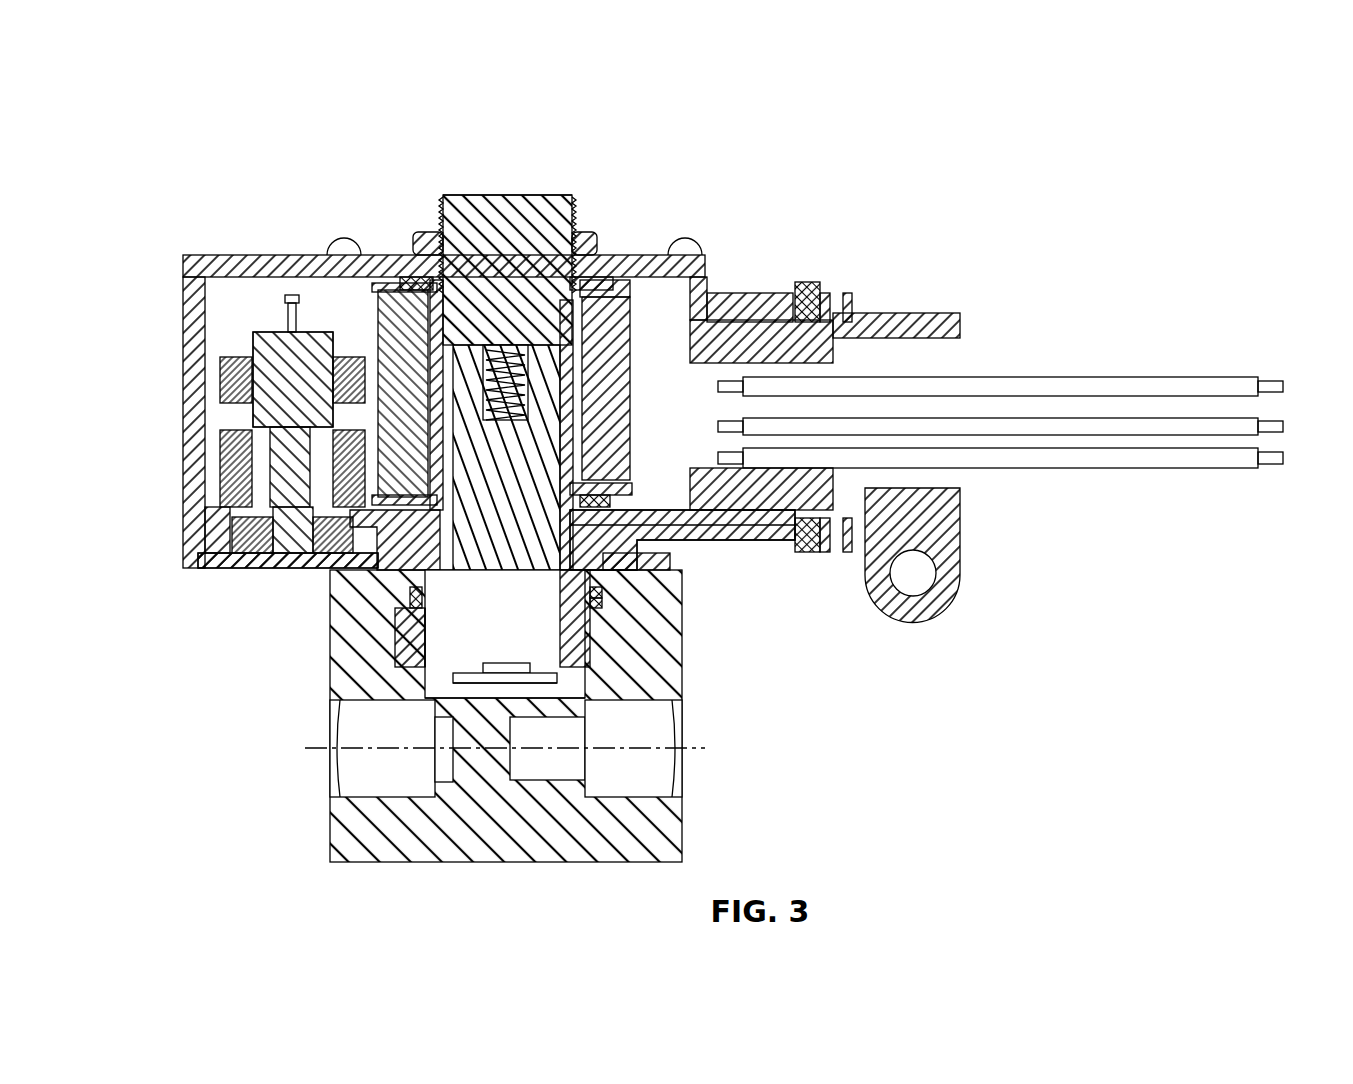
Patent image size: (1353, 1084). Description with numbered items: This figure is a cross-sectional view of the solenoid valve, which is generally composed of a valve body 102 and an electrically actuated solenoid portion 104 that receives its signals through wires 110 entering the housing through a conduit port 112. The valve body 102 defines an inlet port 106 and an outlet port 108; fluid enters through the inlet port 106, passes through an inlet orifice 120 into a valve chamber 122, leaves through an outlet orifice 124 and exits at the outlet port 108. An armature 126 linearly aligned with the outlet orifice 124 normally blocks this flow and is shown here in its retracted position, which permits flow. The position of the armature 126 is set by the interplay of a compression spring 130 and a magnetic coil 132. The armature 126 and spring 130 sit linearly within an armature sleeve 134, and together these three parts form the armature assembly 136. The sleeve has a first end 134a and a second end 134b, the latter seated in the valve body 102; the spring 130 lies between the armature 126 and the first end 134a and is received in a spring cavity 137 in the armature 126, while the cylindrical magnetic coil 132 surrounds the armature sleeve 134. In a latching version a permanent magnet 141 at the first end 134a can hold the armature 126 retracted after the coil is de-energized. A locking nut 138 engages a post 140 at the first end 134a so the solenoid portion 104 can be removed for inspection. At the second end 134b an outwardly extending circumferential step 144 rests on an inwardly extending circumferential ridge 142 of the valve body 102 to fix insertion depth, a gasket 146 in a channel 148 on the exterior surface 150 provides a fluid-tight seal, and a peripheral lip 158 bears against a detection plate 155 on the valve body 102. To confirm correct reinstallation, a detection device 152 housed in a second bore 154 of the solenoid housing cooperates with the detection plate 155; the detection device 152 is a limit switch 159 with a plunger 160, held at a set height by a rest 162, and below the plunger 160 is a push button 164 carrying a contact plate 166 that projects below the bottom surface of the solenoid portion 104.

The valve body 102 is at (775, 677).
The solenoid portion 104 is at (670, 165).
The inlet port 106 is at (345, 755).
The outlet port 108 is at (665, 755).
The wires 110 is at (1055, 385).
The conduit port 112 is at (915, 318).
The inlet orifice 120 is at (448, 690).
The valve chamber 122 is at (590, 683).
The outlet orifice 124 is at (560, 700).
The armature 126 is at (506, 504).
The spring 130 is at (487, 335).
The magnetic coil 132 is at (400, 340).
The armature sleeve 134 is at (410, 598).
The first end of the armature sleeve 134a is at (578, 320).
The second end of the armature sleeve 134b is at (578, 640).
The armature assembly 136 is at (585, 466).
The spring cavity 137 is at (612, 360).
The locking nut 138 is at (423, 232).
The post 140 is at (528, 200).
The permanent magnet 141 is at (512, 360).
The circumferential ridge 142 is at (418, 628).
The circumferential step 144 is at (430, 660).
The gasket 146 is at (603, 592).
The channel 148 is at (600, 605).
The exterior surface 150 is at (690, 542).
The detection device 152 is at (240, 327).
The second bore 154 is at (222, 380).
The detection plate 155 is at (228, 560).
The peripheral lip 158 is at (808, 550).
The limit switch 159 is at (282, 350).
The plunger 160 is at (292, 498).
The rest 162 is at (300, 478).
The push button 164 is at (240, 540).
The contact plate 166 is at (275, 530).